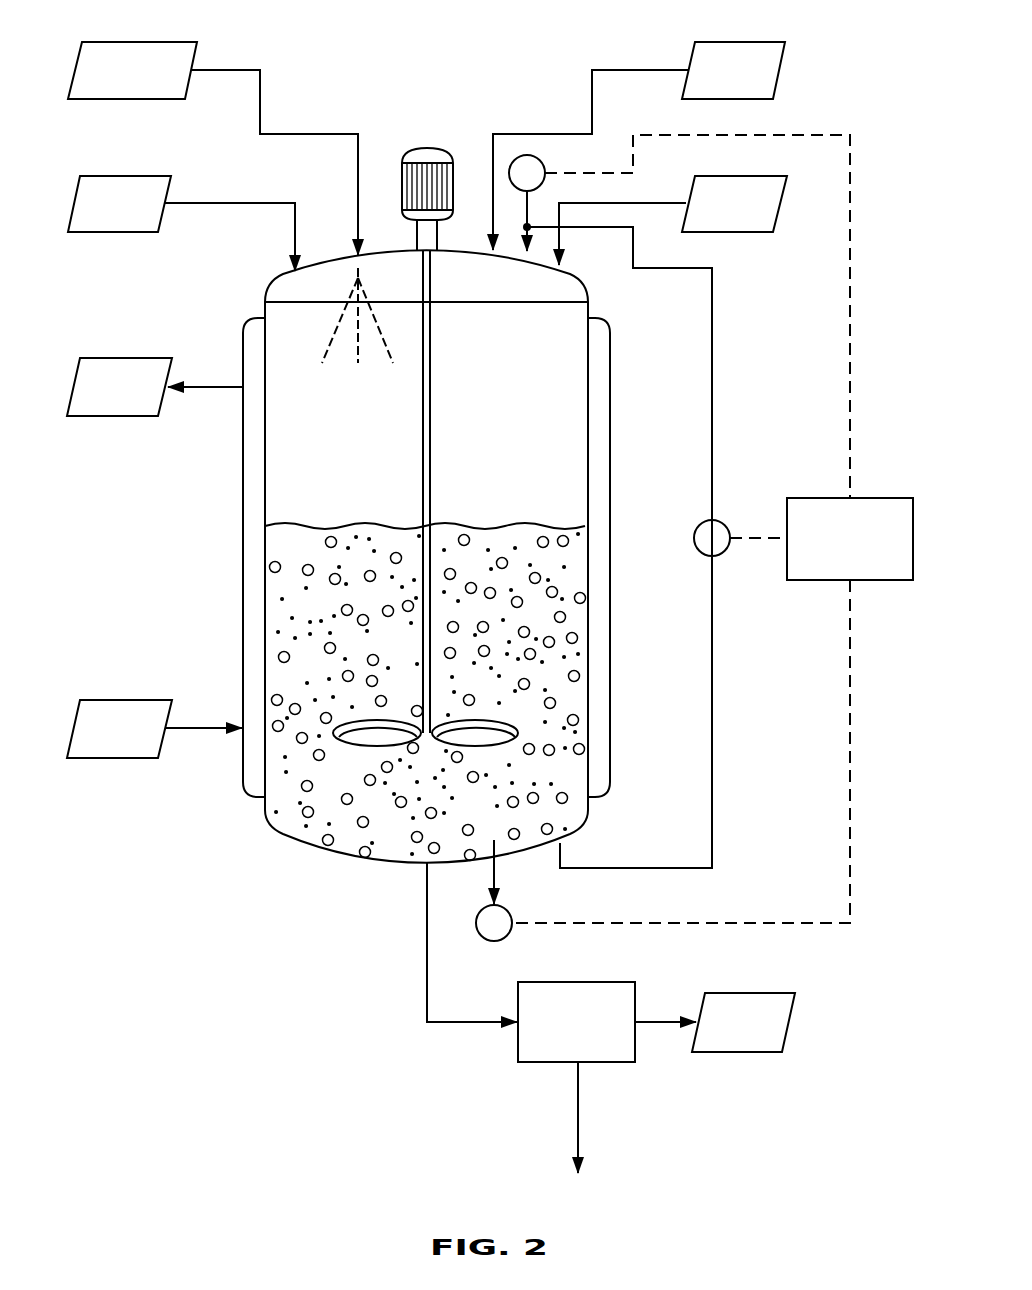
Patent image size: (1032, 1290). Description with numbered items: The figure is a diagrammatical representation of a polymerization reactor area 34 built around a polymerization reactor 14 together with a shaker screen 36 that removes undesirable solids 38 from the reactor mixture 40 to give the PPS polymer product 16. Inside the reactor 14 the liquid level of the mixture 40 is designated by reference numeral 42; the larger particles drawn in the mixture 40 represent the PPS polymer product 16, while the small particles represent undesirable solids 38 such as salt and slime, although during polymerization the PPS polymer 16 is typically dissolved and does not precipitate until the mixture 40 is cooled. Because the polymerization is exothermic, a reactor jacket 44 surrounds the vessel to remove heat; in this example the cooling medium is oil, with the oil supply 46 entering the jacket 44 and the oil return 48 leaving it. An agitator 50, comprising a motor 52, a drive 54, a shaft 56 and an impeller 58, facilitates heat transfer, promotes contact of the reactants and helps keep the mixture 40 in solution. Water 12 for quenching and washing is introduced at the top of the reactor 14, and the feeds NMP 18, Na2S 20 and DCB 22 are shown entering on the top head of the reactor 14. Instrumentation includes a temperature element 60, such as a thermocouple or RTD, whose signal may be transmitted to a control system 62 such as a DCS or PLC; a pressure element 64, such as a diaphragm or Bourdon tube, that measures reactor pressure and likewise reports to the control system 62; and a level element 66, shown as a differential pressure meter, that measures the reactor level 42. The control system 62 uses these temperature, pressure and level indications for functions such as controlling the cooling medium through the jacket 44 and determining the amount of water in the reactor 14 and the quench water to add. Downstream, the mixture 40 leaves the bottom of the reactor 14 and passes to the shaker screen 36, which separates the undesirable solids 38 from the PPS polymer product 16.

The water 12 is at (143, 42).
The polymerization reactor 14 is at (285, 277).
The PPS polymer product 16 is at (578, 636).
The NMP 18 is at (120, 233).
The Na2S 20 is at (727, 233).
The DCB 22 is at (738, 42).
The polymerization reactor area 34 is at (812, 115).
The shaker screen 36 is at (580, 982).
The undesirable solids 38 is at (580, 655).
The reactor mixture 40 is at (300, 617).
The liquid level 42 is at (468, 523).
The reactor jacket 44 is at (613, 528).
The oil supply 46 is at (124, 700).
The oil return 48 is at (124, 356).
The agitator 50 is at (351, 456).
The motor 52 is at (407, 173).
The drive 54 is at (430, 241).
The shaft 56 is at (432, 405).
The impeller 58 is at (360, 748).
The temperature element 60 is at (477, 928).
The control system 62 is at (830, 582).
The pressure element 64 is at (543, 168).
The level element 66 is at (692, 539).